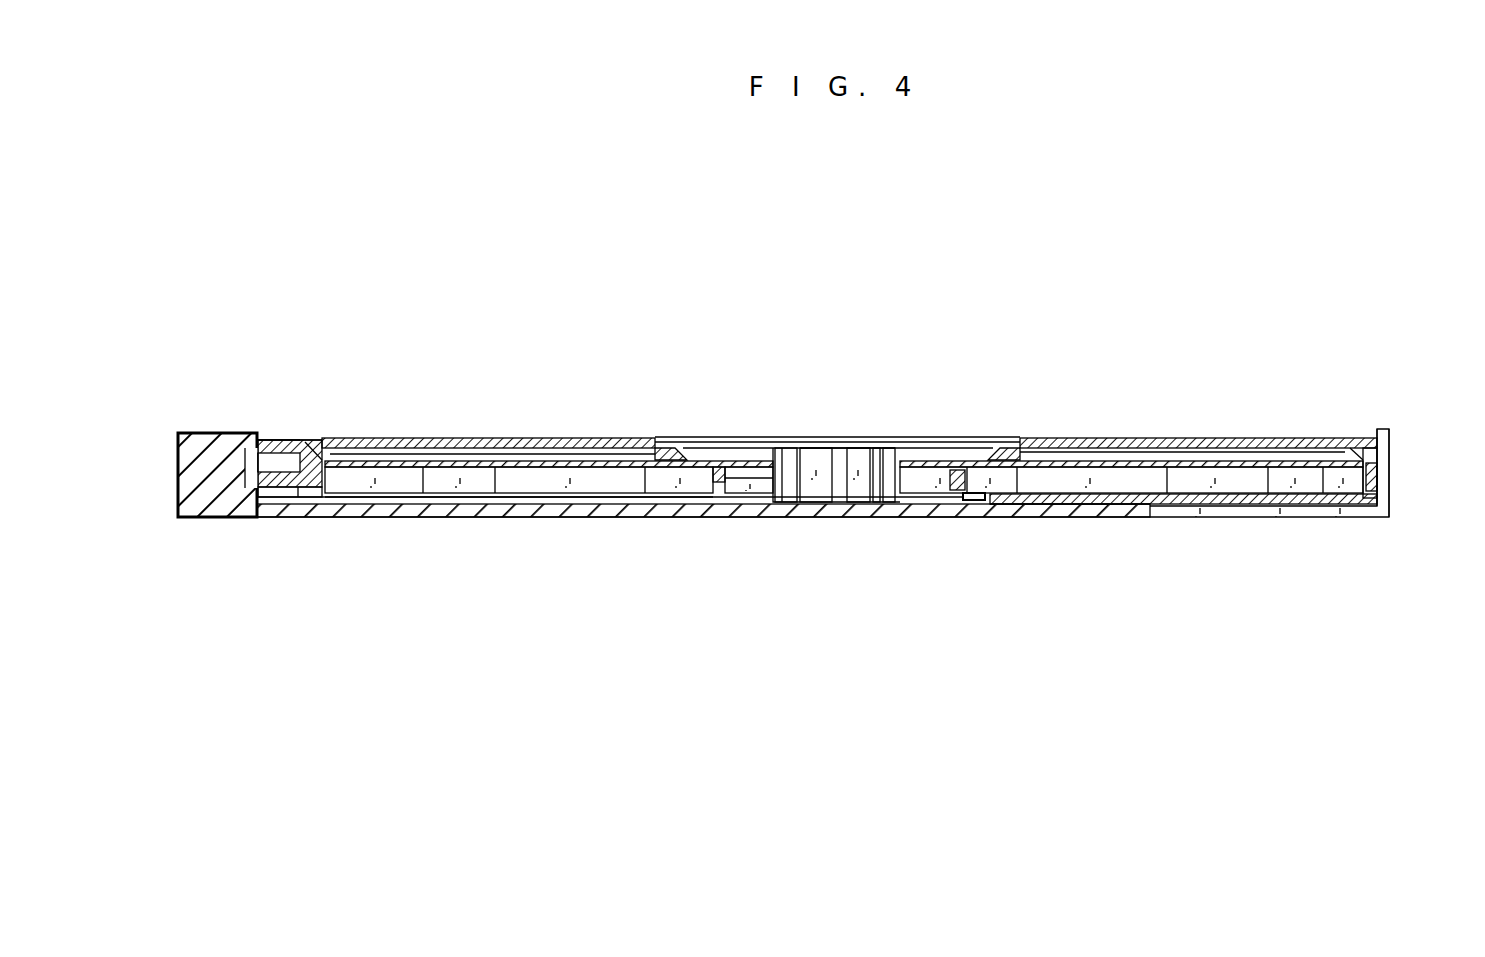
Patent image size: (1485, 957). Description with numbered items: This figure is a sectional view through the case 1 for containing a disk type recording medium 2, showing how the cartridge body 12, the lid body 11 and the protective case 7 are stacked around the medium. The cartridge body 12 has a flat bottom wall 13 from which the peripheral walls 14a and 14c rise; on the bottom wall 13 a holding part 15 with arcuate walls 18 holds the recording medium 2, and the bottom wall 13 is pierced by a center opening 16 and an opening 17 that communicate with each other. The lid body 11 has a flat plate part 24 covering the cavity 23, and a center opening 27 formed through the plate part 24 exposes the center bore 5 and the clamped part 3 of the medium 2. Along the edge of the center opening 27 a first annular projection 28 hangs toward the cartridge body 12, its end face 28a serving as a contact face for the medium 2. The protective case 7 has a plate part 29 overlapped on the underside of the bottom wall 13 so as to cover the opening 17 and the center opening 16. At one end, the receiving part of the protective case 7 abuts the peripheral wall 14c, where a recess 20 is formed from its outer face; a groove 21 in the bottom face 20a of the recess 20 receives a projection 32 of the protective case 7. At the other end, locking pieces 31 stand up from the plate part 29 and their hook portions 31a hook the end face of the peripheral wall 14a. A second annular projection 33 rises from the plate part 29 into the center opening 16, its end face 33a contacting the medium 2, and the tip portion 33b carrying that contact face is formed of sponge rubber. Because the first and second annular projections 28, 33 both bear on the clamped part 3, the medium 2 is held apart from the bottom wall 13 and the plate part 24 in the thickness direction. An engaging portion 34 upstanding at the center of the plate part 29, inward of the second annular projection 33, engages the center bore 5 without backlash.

The case 1 is at (925, 318).
The disk type recording medium 2 is at (1250, 462).
The clamped part 3 is at (745, 462).
The center bore 5 is at (898, 455).
The protective case 7 is at (213, 431).
The lid body 11 is at (1168, 436).
The cartridge body 12 is at (1303, 437).
The bottom wall 13 is at (1215, 502).
The peripheral wall 14a is at (1375, 488).
The peripheral wall 14c is at (290, 433).
The holding part 15 is at (406, 462).
The center opening 16 is at (1005, 514).
The opening 17 is at (605, 497).
The arcuate walls 18 is at (388, 487).
The recess 20 is at (250, 478).
The bottom face 20a is at (243, 450).
The groove 21 is at (293, 490).
The cavity 23 is at (478, 440).
The plate part 24 is at (548, 462).
The center opening 27 is at (980, 455).
The first annular projection 28 is at (1020, 460).
The end face 28a is at (683, 458).
The plate part 29 is at (808, 504).
The locking pieces 31 is at (1380, 455).
The hook portions 31a is at (1355, 433).
The projection 32 is at (247, 475).
The second annular projection 33 is at (710, 481).
The end face 33a is at (958, 478).
The portion 33b is at (970, 498).
The engaging portion 34 is at (860, 444).